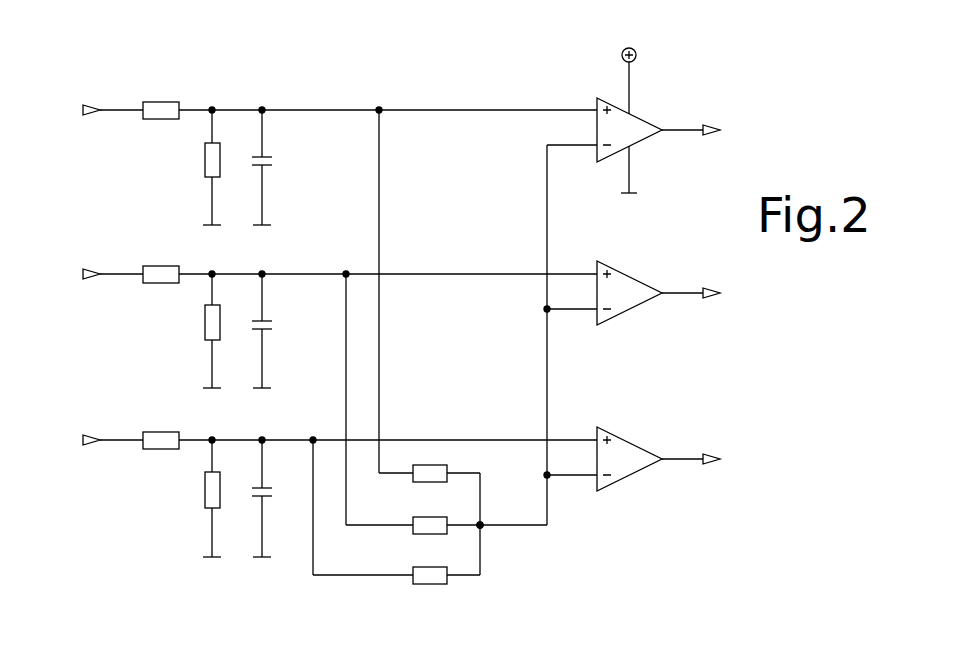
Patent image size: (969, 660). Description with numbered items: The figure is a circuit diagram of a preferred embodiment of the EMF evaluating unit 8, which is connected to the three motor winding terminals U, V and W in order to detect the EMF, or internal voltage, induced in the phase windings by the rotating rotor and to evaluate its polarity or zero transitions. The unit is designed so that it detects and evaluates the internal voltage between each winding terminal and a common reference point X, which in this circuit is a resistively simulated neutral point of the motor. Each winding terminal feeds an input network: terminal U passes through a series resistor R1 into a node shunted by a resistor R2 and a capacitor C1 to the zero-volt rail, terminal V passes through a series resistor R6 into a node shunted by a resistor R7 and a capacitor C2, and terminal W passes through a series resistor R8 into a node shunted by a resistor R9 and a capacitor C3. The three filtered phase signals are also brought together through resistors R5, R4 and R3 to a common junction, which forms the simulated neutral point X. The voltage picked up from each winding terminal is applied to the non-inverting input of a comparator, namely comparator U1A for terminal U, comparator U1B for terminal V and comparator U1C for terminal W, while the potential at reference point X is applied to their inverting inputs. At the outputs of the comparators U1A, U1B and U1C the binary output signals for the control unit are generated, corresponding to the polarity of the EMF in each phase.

The EMF evaluating unit 8 is at (745, 89).
The resistor R1 is at (161, 96).
The resistor R2 is at (196, 167).
The resistor R3 is at (435, 589).
The resistor R4 is at (434, 538).
The resistor R5 is at (434, 488).
The resistor R6 is at (161, 262).
The resistor R7 is at (196, 331).
The resistor R8 is at (161, 425).
The resistor R9 is at (196, 498).
The capacitor C1 is at (246, 167).
The capacitor C2 is at (246, 331).
The capacitor C3 is at (246, 498).
The comparator U1A is at (631, 120).
The comparator U1B is at (630, 287).
The comparator U1C is at (633, 453).
The reference point X is at (492, 533).